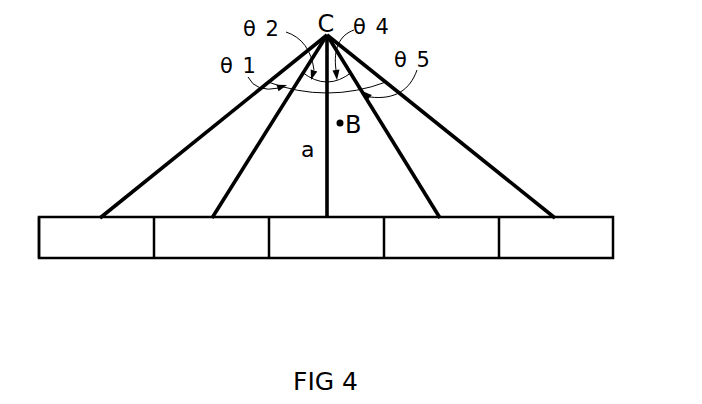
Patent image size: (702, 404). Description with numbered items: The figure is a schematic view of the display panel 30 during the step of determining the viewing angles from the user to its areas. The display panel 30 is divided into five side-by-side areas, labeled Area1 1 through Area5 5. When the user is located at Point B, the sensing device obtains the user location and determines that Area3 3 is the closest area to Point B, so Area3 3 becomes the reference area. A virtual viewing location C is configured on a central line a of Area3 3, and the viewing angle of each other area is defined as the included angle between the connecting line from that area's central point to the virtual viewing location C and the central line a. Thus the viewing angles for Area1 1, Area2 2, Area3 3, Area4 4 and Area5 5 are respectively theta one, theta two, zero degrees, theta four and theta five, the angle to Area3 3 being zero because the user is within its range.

The display panel 30 is at (326, 284).
The Area1 1 is at (72, 237).
The Area2 2 is at (187, 237).
The Area3 3 is at (301, 237).
The Area4 4 is at (416, 237).
The Area5 5 is at (531, 237).